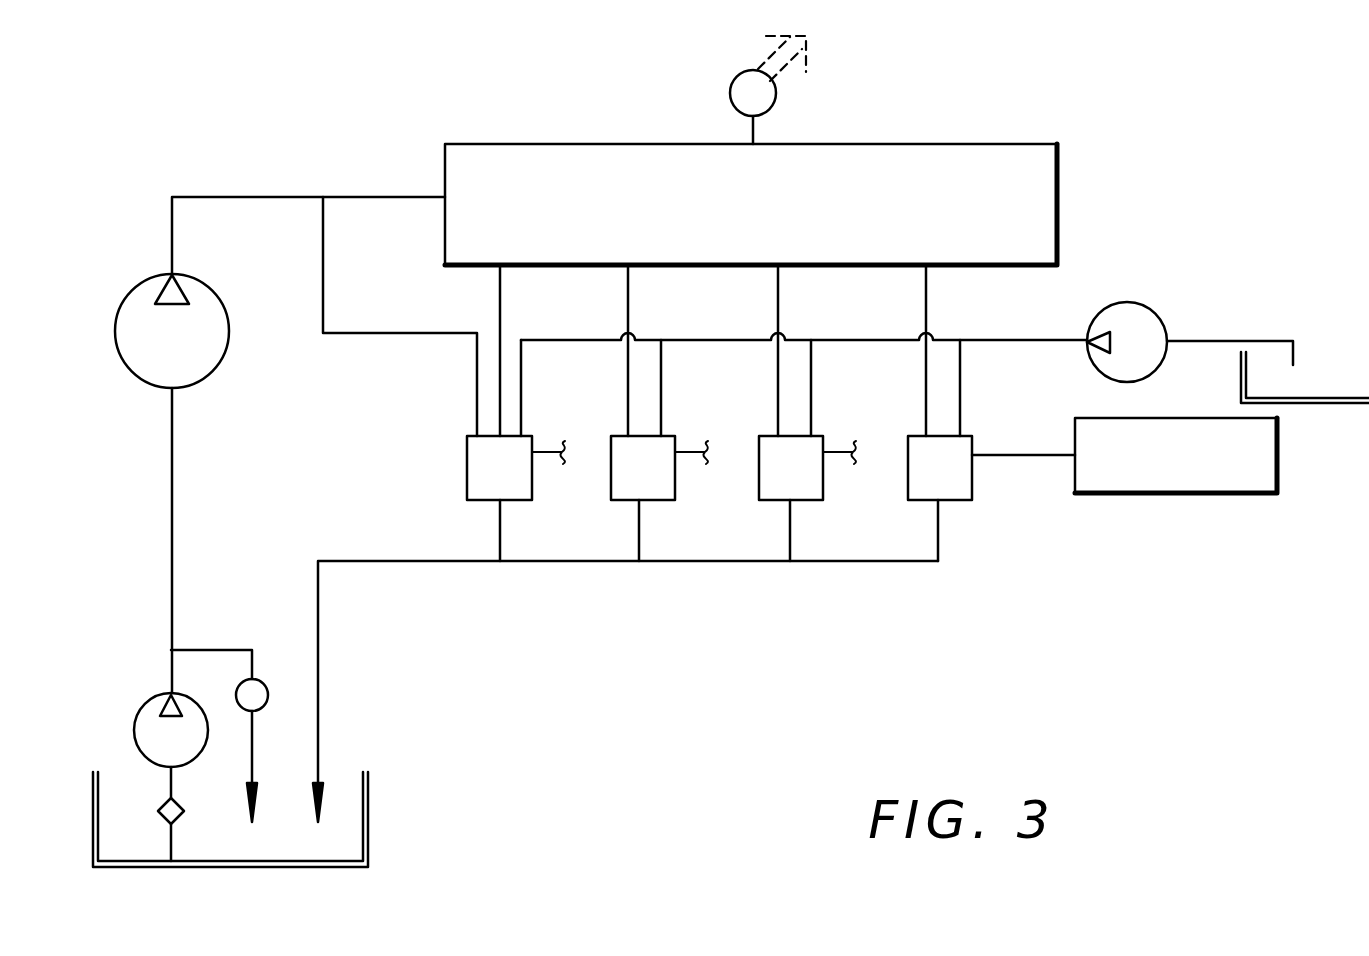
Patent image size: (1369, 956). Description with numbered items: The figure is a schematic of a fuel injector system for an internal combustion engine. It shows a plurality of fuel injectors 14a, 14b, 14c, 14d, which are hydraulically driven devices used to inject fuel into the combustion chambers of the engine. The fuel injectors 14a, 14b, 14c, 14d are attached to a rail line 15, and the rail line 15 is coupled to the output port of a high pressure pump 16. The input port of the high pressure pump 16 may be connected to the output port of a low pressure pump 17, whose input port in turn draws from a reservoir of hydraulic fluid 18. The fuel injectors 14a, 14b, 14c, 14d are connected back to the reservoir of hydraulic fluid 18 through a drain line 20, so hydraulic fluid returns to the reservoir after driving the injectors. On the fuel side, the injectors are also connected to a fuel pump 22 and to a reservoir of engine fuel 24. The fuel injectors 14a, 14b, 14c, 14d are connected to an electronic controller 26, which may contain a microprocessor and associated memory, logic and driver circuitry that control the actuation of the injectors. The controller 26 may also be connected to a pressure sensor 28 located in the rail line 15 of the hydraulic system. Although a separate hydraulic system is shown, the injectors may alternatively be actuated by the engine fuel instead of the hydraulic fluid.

The fuel injector 14a is at (478, 486).
The fuel injector 14b is at (621, 486).
The fuel injector 14c is at (769, 486).
The fuel injector 14d is at (918, 486).
The rail line 15 is at (751, 204).
The high pressure pump 16 is at (200, 356).
The low pressure pump 17 is at (150, 717).
The reservoir of hydraulic fluid 18 is at (230, 819).
The drain line 20 is at (700, 565).
The fuel pump 22 is at (1145, 322).
The reservoir of engine fuel 24 is at (1305, 377).
The electronic controller 26 is at (1176, 455).
The pressure sensor 28 is at (776, 93).